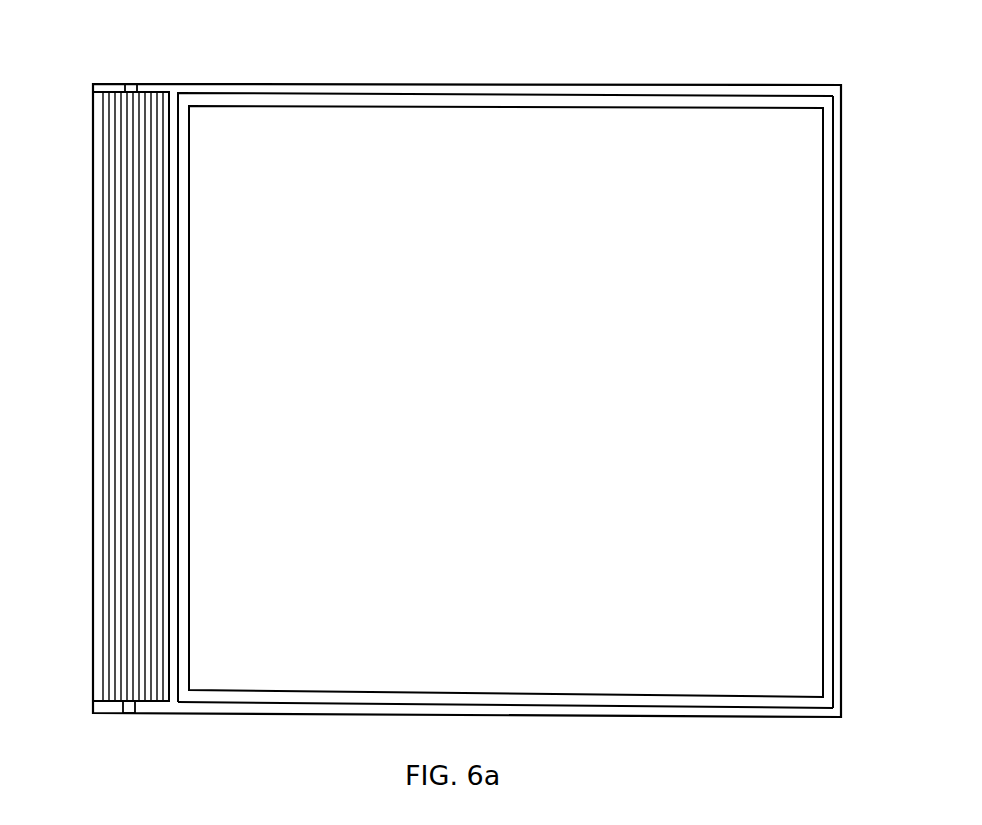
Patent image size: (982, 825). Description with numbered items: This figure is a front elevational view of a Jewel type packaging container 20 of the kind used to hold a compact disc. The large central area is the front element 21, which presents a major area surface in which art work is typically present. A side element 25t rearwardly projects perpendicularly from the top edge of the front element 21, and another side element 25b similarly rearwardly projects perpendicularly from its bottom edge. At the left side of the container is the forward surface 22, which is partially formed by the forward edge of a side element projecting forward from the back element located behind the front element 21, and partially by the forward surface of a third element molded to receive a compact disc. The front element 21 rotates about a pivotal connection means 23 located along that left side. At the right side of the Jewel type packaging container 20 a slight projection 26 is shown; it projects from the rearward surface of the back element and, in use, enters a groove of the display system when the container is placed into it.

The Jewel type packaging container 20 is at (766, 78).
The front element 21 is at (506, 401).
The forward surface 22 is at (128, 266).
The pivotal connection means 23 is at (138, 77).
The side element 25t is at (495, 86).
The side element 25b is at (635, 708).
The slight projection 26 is at (842, 393).